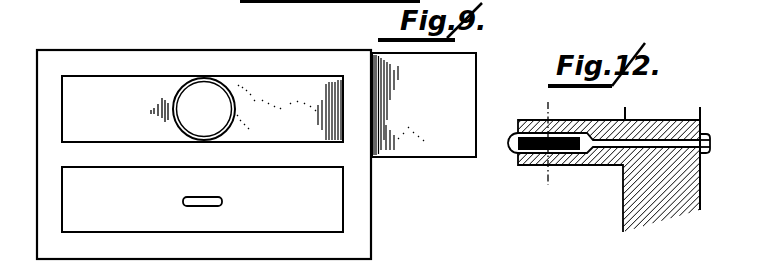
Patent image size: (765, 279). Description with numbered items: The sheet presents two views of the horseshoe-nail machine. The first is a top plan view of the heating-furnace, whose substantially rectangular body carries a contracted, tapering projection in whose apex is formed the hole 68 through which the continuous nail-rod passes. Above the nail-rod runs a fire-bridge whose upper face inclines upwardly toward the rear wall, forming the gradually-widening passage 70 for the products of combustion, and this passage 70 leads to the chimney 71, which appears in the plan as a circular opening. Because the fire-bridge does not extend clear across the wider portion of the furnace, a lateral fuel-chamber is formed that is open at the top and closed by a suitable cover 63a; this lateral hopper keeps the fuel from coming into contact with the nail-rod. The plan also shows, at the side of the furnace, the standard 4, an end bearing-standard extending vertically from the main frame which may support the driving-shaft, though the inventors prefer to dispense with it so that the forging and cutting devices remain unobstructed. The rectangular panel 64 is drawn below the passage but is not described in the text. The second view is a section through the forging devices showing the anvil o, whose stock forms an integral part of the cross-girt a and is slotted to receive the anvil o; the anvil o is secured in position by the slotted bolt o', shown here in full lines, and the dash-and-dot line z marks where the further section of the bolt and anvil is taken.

In FIG. 9, the standard 4 is at (256, 154).
In FIG. 9, the passage 70 is at (202, 109).
In FIG. 9, the chimney 71 is at (203, 109).
In FIG. 9, the lower panel 64 is at (202, 199).
In FIG. 9, the cover 63a is at (224, 202).
In FIG. 9, the hole 68 is at (468, 96).
In FIG. 12, the cross-girt a is at (609, 178).
In FIG. 12, the anvil o is at (600, 155).
In FIG. 12, the slotted bolt o' is at (720, 142).
In FIG. 12, the section line z is at (546, 143).